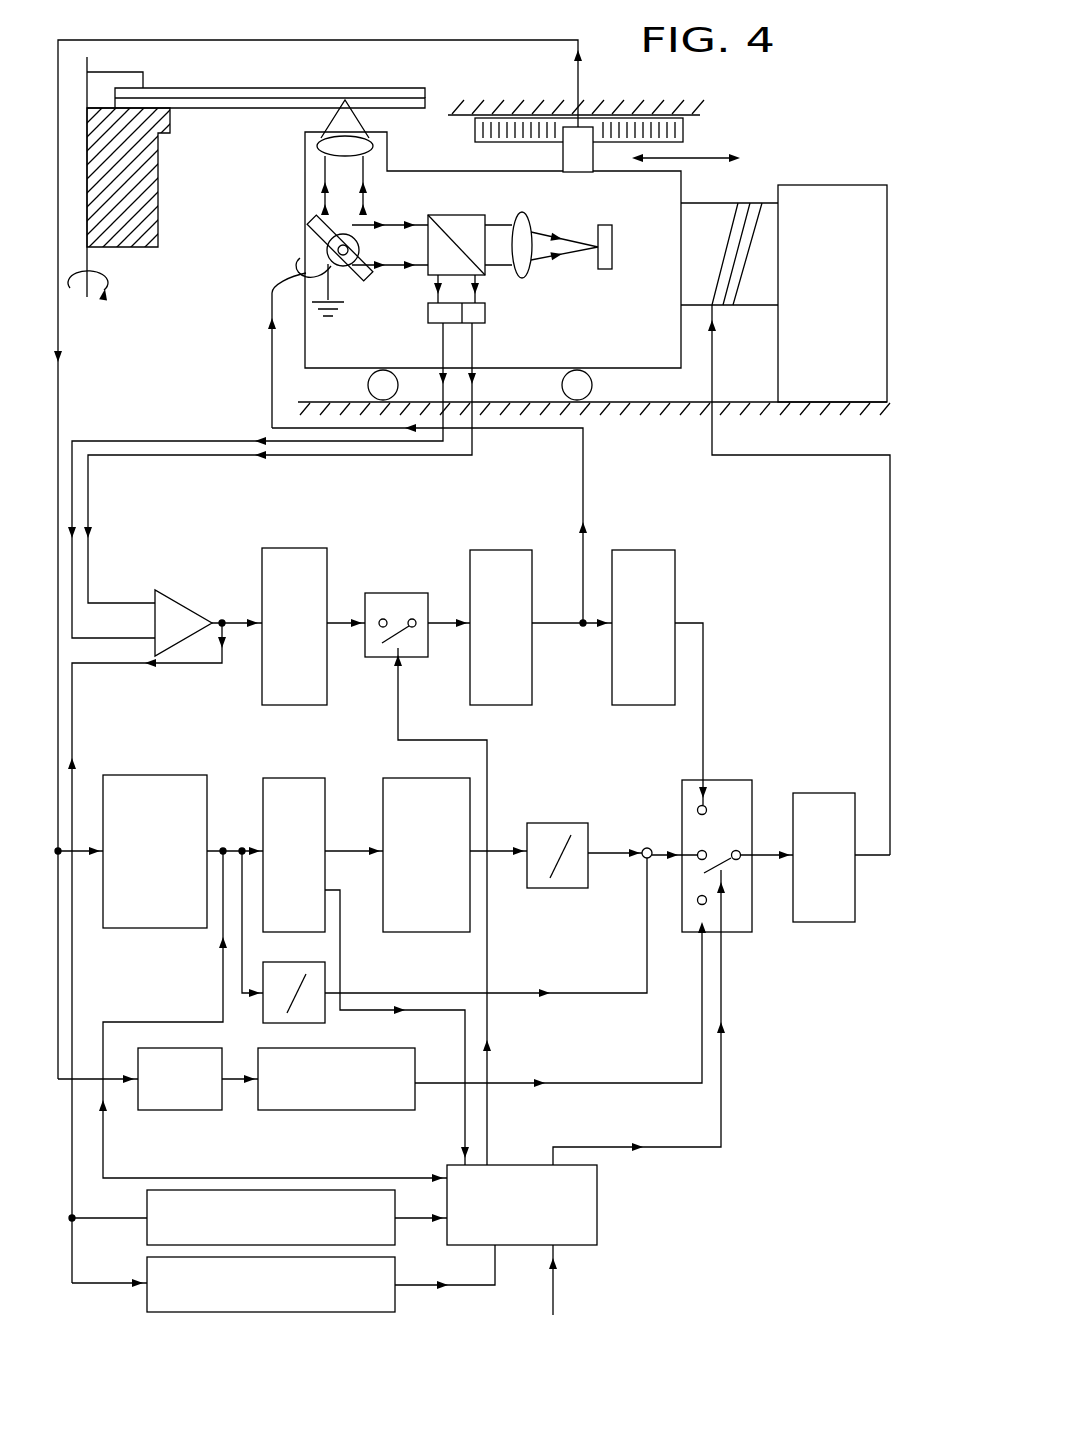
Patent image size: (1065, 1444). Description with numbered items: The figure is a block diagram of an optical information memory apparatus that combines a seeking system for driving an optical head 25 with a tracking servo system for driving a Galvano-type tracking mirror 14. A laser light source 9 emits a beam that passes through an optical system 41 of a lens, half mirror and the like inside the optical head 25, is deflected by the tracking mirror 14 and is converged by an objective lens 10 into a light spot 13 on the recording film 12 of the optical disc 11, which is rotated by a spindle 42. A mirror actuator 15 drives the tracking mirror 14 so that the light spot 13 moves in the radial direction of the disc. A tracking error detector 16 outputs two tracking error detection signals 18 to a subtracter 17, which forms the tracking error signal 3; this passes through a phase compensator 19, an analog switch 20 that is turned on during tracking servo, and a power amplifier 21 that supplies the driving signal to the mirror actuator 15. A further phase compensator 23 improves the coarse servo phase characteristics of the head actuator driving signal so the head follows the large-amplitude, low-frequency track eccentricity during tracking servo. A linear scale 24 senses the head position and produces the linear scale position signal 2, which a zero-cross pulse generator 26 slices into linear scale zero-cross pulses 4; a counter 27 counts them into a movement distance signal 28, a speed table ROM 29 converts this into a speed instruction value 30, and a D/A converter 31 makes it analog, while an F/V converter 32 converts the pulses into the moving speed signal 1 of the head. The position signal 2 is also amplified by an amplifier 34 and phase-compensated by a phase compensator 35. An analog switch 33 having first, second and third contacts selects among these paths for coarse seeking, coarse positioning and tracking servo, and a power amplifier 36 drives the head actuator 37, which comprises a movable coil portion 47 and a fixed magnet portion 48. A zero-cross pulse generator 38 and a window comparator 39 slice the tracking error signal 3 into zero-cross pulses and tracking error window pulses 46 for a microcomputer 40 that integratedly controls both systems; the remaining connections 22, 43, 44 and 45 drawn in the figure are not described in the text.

The moving speed signal 1 is at (415, 971).
The linear scale position signal 2 is at (108, 20).
The tracking error signal 3 is at (240, 620).
The linear scale zero-cross pulses 4 is at (416, 1218).
The laser light source 9 is at (605, 272).
The objective lens 10 is at (320, 152).
The optical disc 11 is at (236, 110).
The recording film 12 is at (412, 90).
The light spot 13 is at (343, 95).
The tracking mirror 14 is at (312, 238).
The mirror actuator 15 is at (302, 272).
The tracking error detector 16 is at (428, 313).
The subtracter 17 is at (155, 598).
The tracking error detection signals 18 is at (193, 446).
The phase compensator 19 is at (328, 568).
The analog switch 20 is at (412, 660).
The power amplifier 21 is at (536, 652).
The power amplifier output line 22 is at (572, 630).
The phase compensator 23 is at (647, 548).
The linear scale 24 is at (585, 152).
The optical head 25 is at (685, 364).
The zero-cross pulse generator 26 is at (125, 930).
The counter 27 is at (328, 815).
The movement distance signal 28 is at (352, 860).
The speed table ROM 29 is at (471, 882).
The speed instruction value 30 is at (500, 845).
The D/A converter 31 is at (590, 870).
The F/V converter 32 is at (327, 1024).
The analog switch 33 is at (680, 935).
The amplifier 34 is at (158, 1112).
The phase compensator 35 is at (310, 1112).
The power amplifier 36 is at (815, 923).
The head actuator 37 is at (836, 166).
The zero-cross pulse generator 38 is at (147, 1205).
The window comparator 39 is at (147, 1270).
The microcomputer 40 is at (598, 1235).
The optical system 41 is at (478, 215).
The spindle 42 is at (140, 250).
The switch control line 43 is at (722, 1138).
The microcomputer input line 44 is at (465, 1110).
The switch control line 45 is at (488, 1098).
The tracking error window pulses 46 is at (470, 1282).
The movable coil portion 47 is at (750, 203).
The fixed magnet portion 48 is at (830, 363).